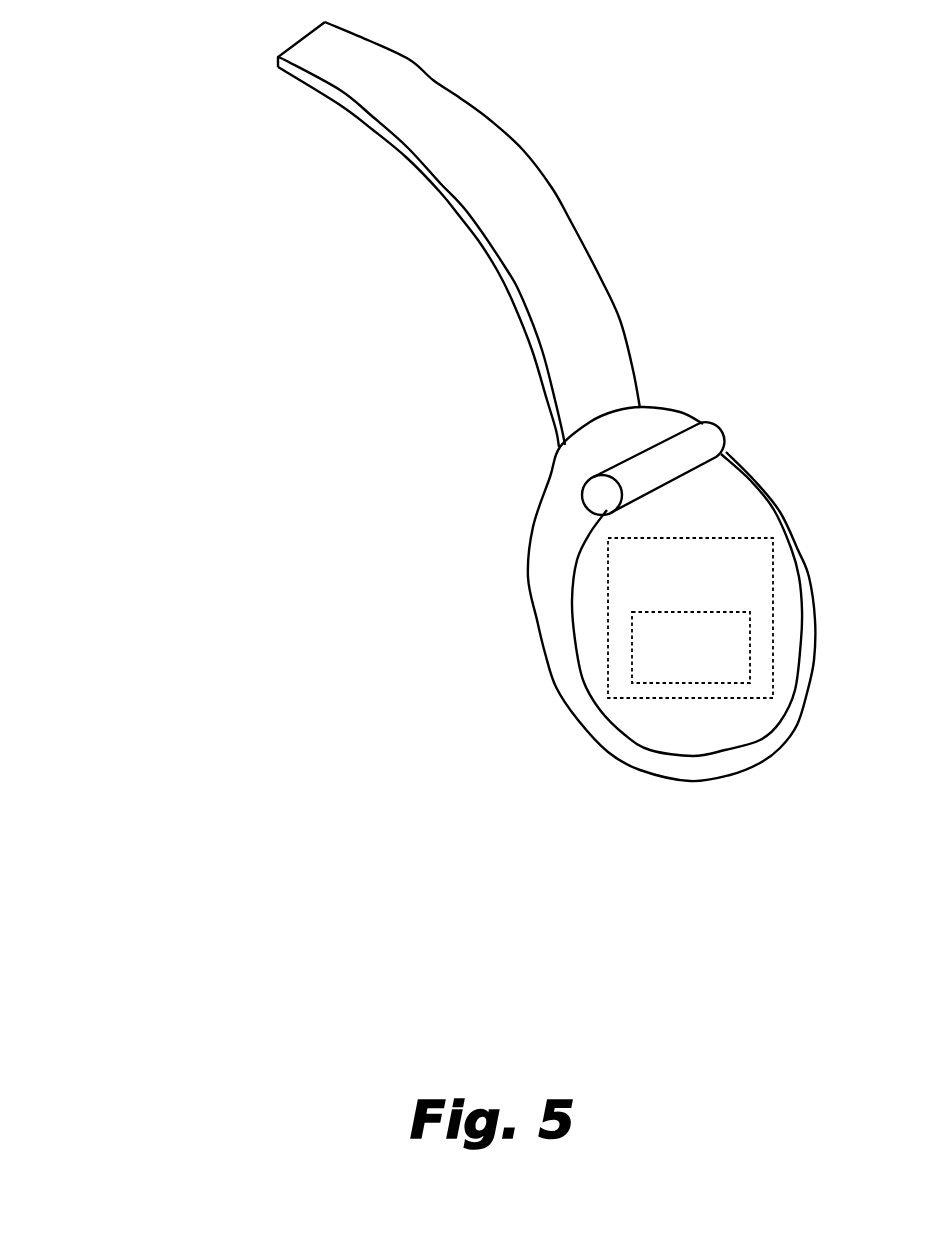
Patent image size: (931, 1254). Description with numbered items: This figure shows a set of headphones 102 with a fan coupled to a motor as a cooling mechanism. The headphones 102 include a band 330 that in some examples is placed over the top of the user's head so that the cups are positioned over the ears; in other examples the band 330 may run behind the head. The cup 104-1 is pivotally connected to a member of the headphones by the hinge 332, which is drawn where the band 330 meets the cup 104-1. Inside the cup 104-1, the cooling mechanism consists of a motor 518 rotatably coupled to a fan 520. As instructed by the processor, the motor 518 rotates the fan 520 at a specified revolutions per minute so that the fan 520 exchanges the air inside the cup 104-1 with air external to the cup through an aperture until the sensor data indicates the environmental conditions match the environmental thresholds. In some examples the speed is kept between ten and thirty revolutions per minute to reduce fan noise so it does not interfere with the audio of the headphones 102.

The headphones 102 is at (174, 114).
The band 330 is at (483, 212).
The hinge 332 is at (618, 476).
The cup 104-1 is at (540, 527).
The motor 518 is at (690, 618).
The fan 520 is at (691, 647).